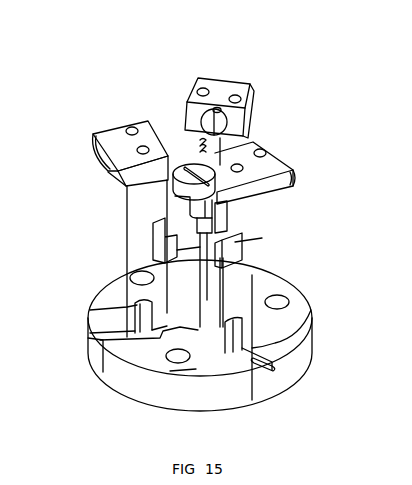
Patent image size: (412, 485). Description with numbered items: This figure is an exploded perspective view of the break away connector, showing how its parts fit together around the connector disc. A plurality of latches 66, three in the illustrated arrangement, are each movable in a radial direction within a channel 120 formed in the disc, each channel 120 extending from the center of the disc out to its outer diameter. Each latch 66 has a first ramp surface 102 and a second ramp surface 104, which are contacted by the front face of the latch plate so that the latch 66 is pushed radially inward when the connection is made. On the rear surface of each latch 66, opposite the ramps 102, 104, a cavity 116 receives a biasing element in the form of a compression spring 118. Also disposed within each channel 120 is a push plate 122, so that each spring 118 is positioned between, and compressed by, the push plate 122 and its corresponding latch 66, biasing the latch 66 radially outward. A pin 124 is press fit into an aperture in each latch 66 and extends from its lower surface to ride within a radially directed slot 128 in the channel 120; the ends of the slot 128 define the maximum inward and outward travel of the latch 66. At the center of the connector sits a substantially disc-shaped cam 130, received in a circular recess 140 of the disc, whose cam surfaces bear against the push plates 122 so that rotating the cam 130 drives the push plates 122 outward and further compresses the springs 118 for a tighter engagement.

The latch 66 is at (221, 97).
The first ramp surface 102 is at (256, 102).
The second ramp surface 104 is at (216, 77).
The cavity 116 is at (201, 110).
The compression spring 118 is at (193, 145).
The channel 120 is at (302, 323).
The push plate 122 is at (228, 207).
The pin 124 is at (255, 173).
The radially directed slot 128 is at (272, 378).
The cam 130 is at (168, 191).
The circular recess 140 is at (200, 327).